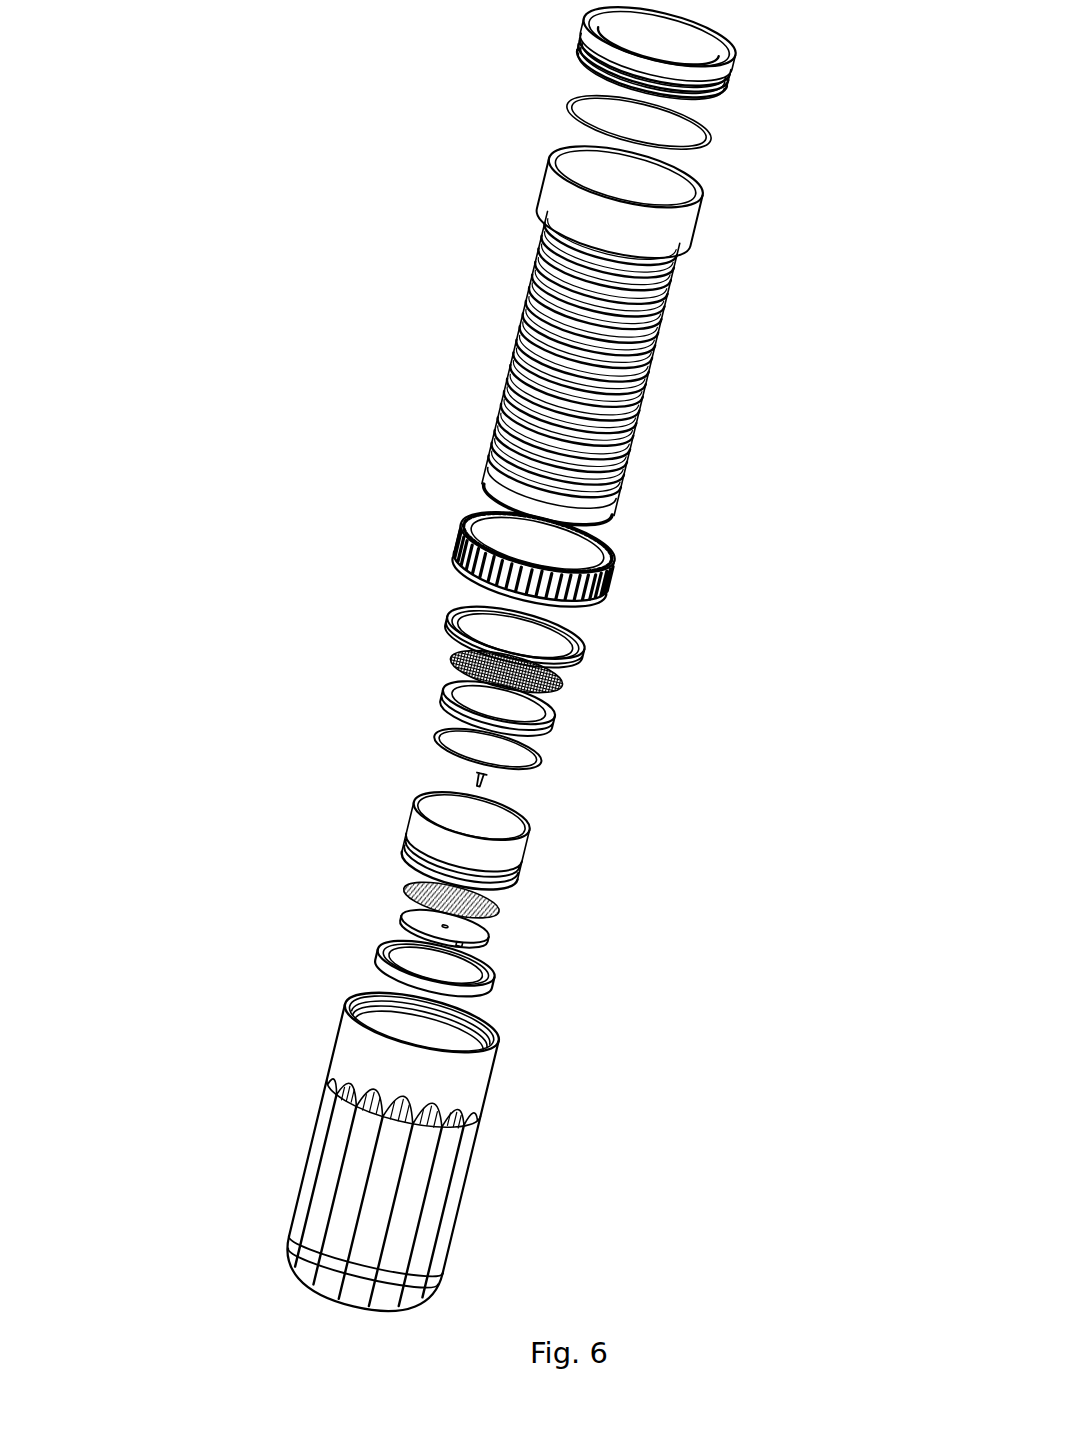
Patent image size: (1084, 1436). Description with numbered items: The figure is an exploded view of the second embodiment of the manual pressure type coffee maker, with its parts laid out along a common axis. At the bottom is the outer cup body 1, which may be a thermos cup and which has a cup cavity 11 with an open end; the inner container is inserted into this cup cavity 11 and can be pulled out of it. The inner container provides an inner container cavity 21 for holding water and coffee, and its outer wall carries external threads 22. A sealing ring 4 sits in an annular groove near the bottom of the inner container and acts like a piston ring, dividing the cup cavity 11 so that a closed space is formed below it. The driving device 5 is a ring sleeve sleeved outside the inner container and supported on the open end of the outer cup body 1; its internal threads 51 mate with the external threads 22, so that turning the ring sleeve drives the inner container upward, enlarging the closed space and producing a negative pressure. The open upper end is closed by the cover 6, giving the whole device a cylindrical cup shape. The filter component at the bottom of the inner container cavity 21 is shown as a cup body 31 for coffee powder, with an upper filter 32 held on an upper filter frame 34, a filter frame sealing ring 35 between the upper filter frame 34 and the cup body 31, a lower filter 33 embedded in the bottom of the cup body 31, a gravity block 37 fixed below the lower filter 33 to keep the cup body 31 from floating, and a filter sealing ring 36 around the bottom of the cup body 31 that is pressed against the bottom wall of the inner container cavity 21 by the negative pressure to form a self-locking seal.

The outer cup body 1 is at (338, 1170).
The cup cavity 11 is at (347, 1000).
The inner container cavity 21 is at (588, 163).
The external threads 22 is at (627, 363).
The sealing ring 4 is at (452, 627).
The driving device 5 is at (457, 553).
The internal threads 51 is at (610, 545).
The cover 6 is at (722, 65).
The cup body 31 is at (500, 855).
The upper filter 32 is at (565, 680).
The lower filter 33 is at (410, 893).
The upper filter frame 34 is at (555, 725).
The filter frame sealing ring 35 is at (540, 765).
The filter sealing ring 36 is at (482, 982).
The gravity block 37 is at (482, 935).